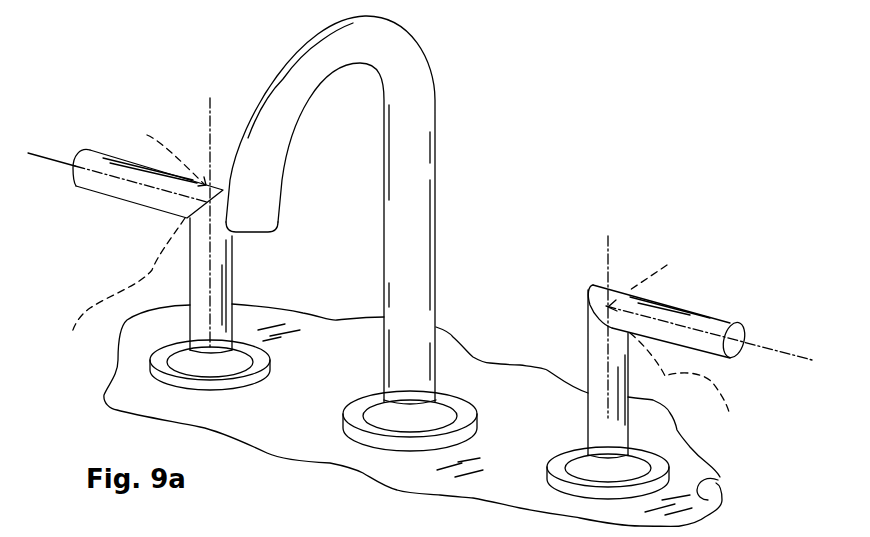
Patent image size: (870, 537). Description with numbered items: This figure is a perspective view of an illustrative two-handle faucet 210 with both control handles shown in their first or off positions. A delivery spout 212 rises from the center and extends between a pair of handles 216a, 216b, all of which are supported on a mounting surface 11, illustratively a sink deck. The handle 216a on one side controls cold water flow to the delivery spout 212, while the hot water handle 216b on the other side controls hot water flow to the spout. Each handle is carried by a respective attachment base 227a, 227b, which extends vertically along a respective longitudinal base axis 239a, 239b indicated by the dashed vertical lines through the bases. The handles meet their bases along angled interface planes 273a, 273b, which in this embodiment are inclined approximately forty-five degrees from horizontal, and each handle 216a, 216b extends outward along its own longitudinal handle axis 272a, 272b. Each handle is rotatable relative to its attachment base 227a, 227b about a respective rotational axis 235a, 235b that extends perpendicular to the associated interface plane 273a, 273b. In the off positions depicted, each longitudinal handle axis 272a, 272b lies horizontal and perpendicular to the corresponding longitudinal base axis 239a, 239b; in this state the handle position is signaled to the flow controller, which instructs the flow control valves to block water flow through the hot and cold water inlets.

The mounting surface 11 is at (718, 480).
The faucet 210 is at (520, 113).
The delivery spout 212 is at (447, 200).
The handle 216a is at (717, 305).
The hot water handle 216b is at (135, 212).
The attachment base 227a is at (588, 344).
The attachment base 227b is at (232, 281).
The rotational axis 235a is at (669, 262).
The rotational axis 235b is at (167, 140).
The longitudinal base axis 239a is at (608, 236).
The longitudinal base axis 239b is at (210, 98).
The longitudinal handle axis 272a is at (779, 353).
The longitudinal handle axis 272b is at (40, 153).
The interface plane 273a is at (692, 386).
The interface plane 273b is at (113, 290).